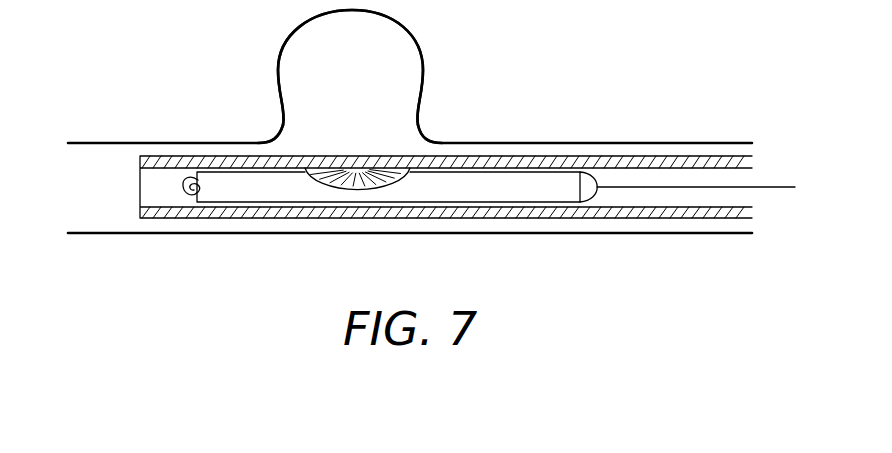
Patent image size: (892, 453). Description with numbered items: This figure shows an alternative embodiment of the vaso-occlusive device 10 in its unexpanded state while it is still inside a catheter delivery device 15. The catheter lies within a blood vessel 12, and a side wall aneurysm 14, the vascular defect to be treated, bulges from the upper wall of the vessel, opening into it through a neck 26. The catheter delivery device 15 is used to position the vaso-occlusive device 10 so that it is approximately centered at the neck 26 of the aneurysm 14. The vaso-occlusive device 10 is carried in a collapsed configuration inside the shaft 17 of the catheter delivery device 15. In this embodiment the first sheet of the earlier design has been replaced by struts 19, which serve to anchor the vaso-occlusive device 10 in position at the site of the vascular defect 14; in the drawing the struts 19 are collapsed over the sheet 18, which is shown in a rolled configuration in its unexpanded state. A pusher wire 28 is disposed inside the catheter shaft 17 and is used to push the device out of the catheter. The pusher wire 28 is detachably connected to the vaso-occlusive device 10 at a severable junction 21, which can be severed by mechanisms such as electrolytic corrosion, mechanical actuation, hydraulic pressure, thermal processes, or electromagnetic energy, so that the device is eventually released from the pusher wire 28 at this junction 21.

The vaso-occlusive device 10 is at (472, 220).
The vessel 12 is at (92, 235).
The aneurysm 14 is at (279, 53).
The catheter delivery device 15 is at (553, 216).
The shaft 17 is at (446, 251).
The sheet 18 is at (417, 147).
The struts 19 is at (371, 168).
The severable junction 21 is at (595, 168).
The neck 26 is at (281, 133).
The pusher wire 28 is at (795, 188).